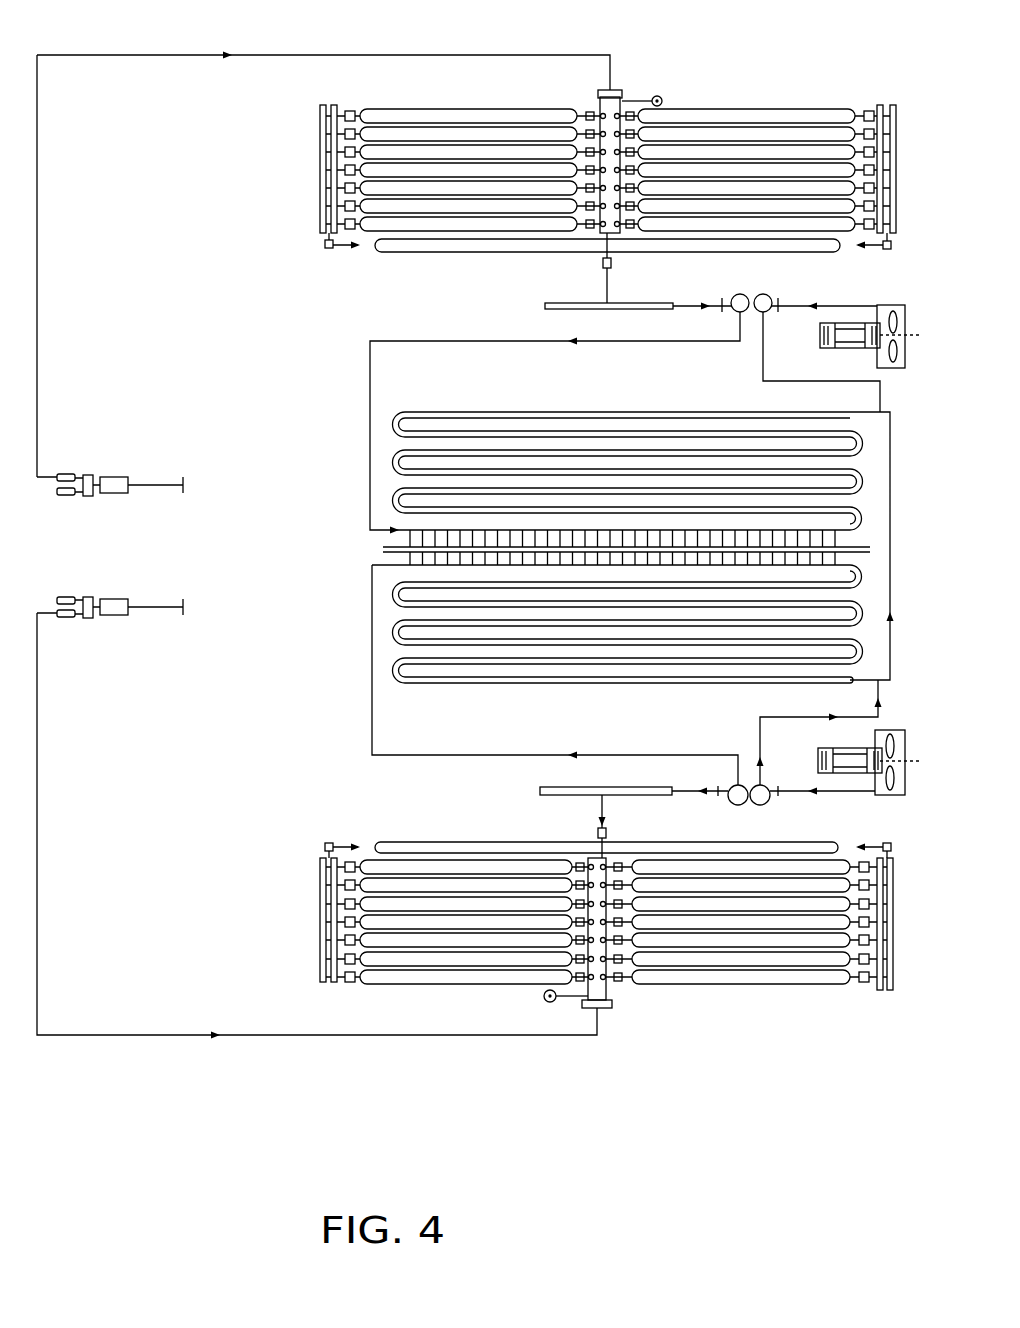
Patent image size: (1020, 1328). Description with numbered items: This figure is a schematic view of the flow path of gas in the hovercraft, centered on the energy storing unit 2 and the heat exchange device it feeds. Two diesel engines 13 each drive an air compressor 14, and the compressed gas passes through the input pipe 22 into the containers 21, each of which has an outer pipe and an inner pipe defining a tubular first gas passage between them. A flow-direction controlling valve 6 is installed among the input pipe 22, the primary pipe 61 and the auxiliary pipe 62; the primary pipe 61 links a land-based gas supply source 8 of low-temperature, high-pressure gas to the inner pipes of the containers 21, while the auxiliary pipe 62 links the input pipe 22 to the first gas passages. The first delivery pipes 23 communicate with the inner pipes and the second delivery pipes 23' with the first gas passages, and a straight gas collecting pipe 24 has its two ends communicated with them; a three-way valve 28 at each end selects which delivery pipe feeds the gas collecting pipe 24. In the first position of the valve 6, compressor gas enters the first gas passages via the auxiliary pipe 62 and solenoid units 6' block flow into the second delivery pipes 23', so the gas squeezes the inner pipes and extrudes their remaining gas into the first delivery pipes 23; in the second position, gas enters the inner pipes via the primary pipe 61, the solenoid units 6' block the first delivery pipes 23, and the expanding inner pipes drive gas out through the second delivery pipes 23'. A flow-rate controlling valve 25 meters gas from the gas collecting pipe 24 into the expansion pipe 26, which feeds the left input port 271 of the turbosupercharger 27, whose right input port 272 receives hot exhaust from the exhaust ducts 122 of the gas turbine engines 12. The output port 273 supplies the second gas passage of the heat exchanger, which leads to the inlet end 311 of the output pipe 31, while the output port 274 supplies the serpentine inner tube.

The energy storing unit 2 is at (801, 96).
The container 21 is at (485, 108).
The input pipe 22 is at (98, 55).
The first delivery pipe 23 is at (608, 117).
The second delivery pipe 23' is at (586, 143).
The gas collecting pipe 24 is at (420, 252).
The flow-rate controlling valve 25 is at (611, 265).
The expansion pipe 26 is at (566, 303).
The turbosupercharger 27 is at (765, 294).
The left input port 271 is at (736, 296).
The right input port 272 is at (790, 300).
The output port 273 is at (738, 315).
The output port 274 is at (765, 315).
The three-way valve 28 is at (328, 248).
The flow-direction controlling valve 6 is at (634, 116).
The solenoid unit 6' is at (607, 140).
The primary pipe 61 is at (624, 90).
The auxiliary pipe 62 is at (600, 92).
The gas supply source 8 is at (662, 100).
The gas turbine engine 12 is at (846, 348).
The exhaust duct 122 is at (875, 305).
The diesel engine 13 is at (115, 477).
The air compressor 14 is at (68, 474).
The output pipe 31 is at (649, 547).
The inlet end 311 is at (870, 550).